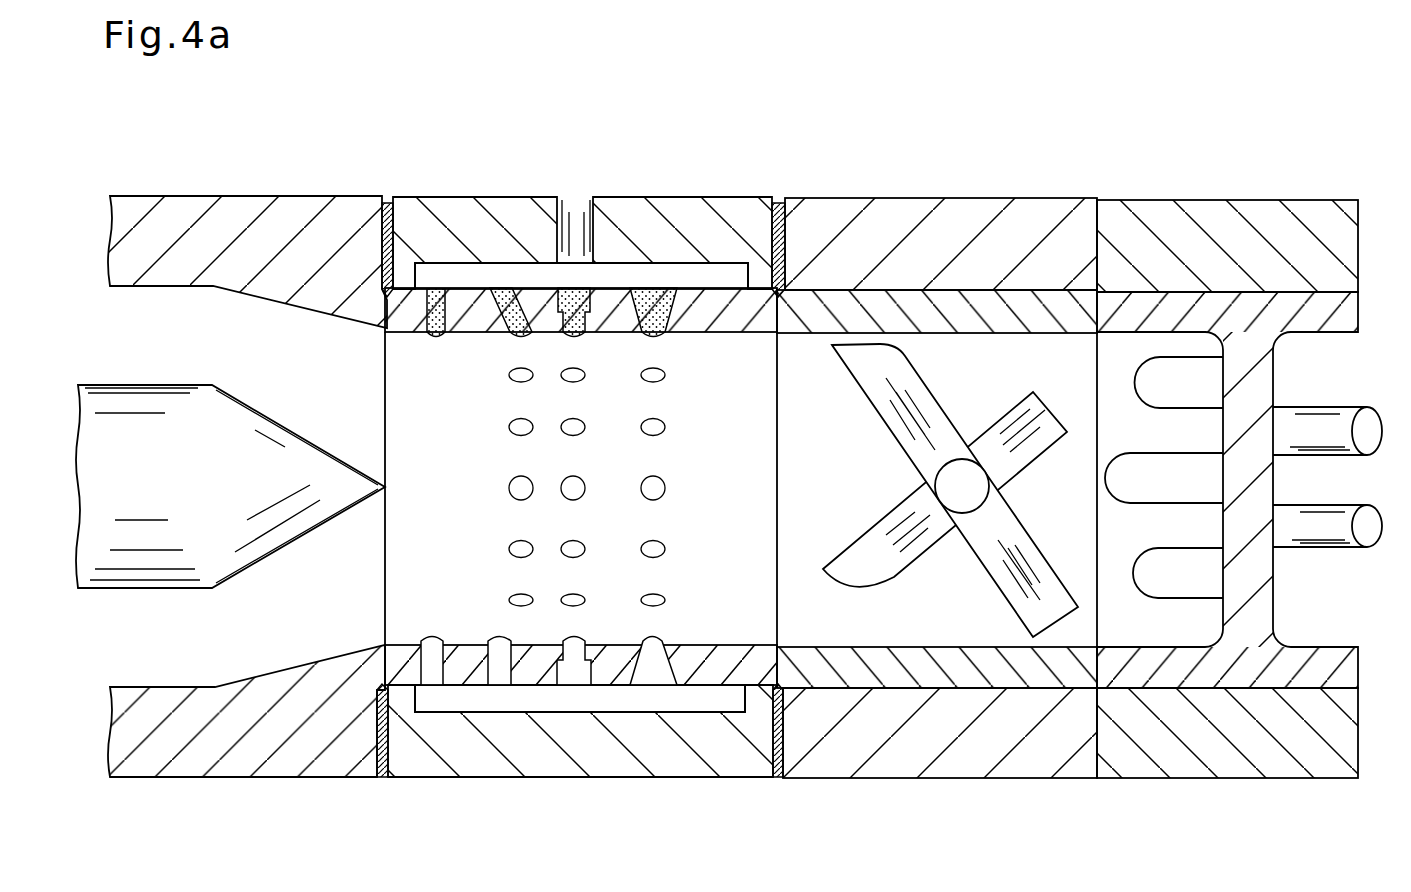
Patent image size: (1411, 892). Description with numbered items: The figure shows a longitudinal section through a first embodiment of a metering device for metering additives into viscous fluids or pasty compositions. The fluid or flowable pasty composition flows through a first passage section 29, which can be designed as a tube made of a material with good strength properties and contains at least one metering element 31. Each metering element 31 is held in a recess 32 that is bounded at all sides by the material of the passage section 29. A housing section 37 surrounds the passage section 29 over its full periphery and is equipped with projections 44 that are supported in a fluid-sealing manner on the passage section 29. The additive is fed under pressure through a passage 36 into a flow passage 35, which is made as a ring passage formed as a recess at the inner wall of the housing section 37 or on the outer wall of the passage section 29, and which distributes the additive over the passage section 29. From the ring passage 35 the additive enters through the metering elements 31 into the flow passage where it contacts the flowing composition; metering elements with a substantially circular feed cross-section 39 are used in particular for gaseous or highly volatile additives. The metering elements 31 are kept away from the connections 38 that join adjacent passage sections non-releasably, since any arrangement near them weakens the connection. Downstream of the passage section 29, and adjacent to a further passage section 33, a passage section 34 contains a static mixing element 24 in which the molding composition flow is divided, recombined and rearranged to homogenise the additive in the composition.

The adjacent passage section 33 is at (302, 226).
The recess 32 is at (394, 205).
The metering element 31 is at (437, 293).
The housing section 37 is at (505, 210).
The passage for the additive supply 36 is at (595, 212).
The flow passage 35 is at (673, 262).
The passage section 34 is at (824, 302).
The static mixing element 24 is at (923, 350).
The circular feed cross-section 39 is at (660, 378).
The projections 44 is at (398, 698).
The passage section 29 is at (723, 670).
The connections 38 is at (793, 678).